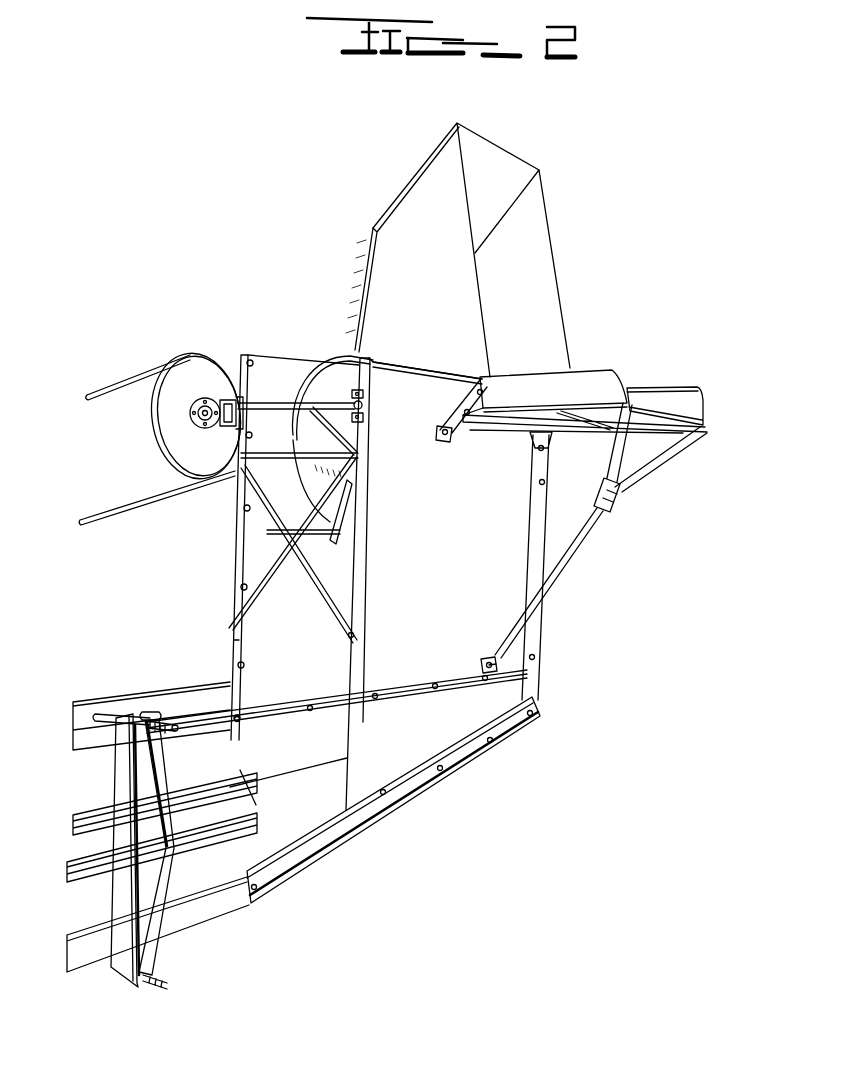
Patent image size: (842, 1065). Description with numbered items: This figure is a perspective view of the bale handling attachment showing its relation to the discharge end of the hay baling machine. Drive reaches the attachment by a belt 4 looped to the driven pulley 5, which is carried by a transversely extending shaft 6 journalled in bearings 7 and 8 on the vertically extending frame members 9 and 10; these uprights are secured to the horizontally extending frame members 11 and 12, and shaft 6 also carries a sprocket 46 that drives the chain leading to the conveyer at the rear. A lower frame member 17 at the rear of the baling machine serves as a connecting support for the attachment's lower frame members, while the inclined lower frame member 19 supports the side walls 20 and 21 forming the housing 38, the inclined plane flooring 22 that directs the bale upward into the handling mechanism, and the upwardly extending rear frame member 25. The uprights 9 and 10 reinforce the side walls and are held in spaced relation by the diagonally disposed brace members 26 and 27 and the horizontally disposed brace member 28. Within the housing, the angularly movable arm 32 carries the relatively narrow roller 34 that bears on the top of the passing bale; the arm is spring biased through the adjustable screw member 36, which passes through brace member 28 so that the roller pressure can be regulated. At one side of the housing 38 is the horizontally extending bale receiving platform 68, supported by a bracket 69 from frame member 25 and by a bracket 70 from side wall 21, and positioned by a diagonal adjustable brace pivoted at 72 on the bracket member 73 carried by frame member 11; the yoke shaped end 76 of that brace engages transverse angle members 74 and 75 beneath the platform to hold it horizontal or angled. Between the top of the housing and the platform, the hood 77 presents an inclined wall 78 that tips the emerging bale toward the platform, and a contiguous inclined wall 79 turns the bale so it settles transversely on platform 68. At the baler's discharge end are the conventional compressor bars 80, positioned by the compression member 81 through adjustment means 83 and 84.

The belt 4 is at (113, 388).
The driven pulley 5 is at (188, 370).
The transversely extending shaft 6 is at (270, 403).
The bearing 7 is at (372, 400).
The bearing 8 is at (244, 357).
The vertically extending frame member 9 is at (231, 557).
The vertically extending frame member 10 is at (367, 575).
The horizontally extending frame member 11 is at (402, 697).
The horizontally extending frame member 12 is at (182, 702).
The lower frame member 17 is at (198, 917).
The lower frame member 19 is at (310, 853).
The side wall 20 is at (327, 687).
The side wall 21 is at (497, 627).
The inclined plane flooring 22 is at (322, 793).
The upwardly extending frame member 25 is at (540, 572).
The diagonally disposed brace member 26 is at (257, 590).
The diagonally disposed brace member 27 is at (303, 567).
The horizontally disposed brace member 28 is at (263, 460).
The angularly movable arm 32 is at (350, 500).
The roller 34 is at (342, 352).
The adjustable screw member 36 is at (280, 457).
The housing 38 is at (276, 340).
The sprocket 46 is at (223, 393).
The bale receiving platform 68 is at (608, 395).
The bracket 69 is at (552, 445).
The bracket 70 is at (457, 430).
The pivot 72 is at (505, 658).
The bracket member 73 is at (474, 664).
The transverse angle member 74 is at (570, 414).
The transverse angle member 75 is at (675, 412).
The adjustable yoke shaped end 76 is at (657, 462).
The hood 77 is at (533, 298).
The inclined wall 78 is at (361, 250).
The contiguous inclined wall 79 is at (505, 162).
The compressor bar 80 is at (223, 788).
The compression member 81 is at (123, 957).
The adjustment means 83 is at (147, 957).
The adjustment means 84 is at (152, 762).